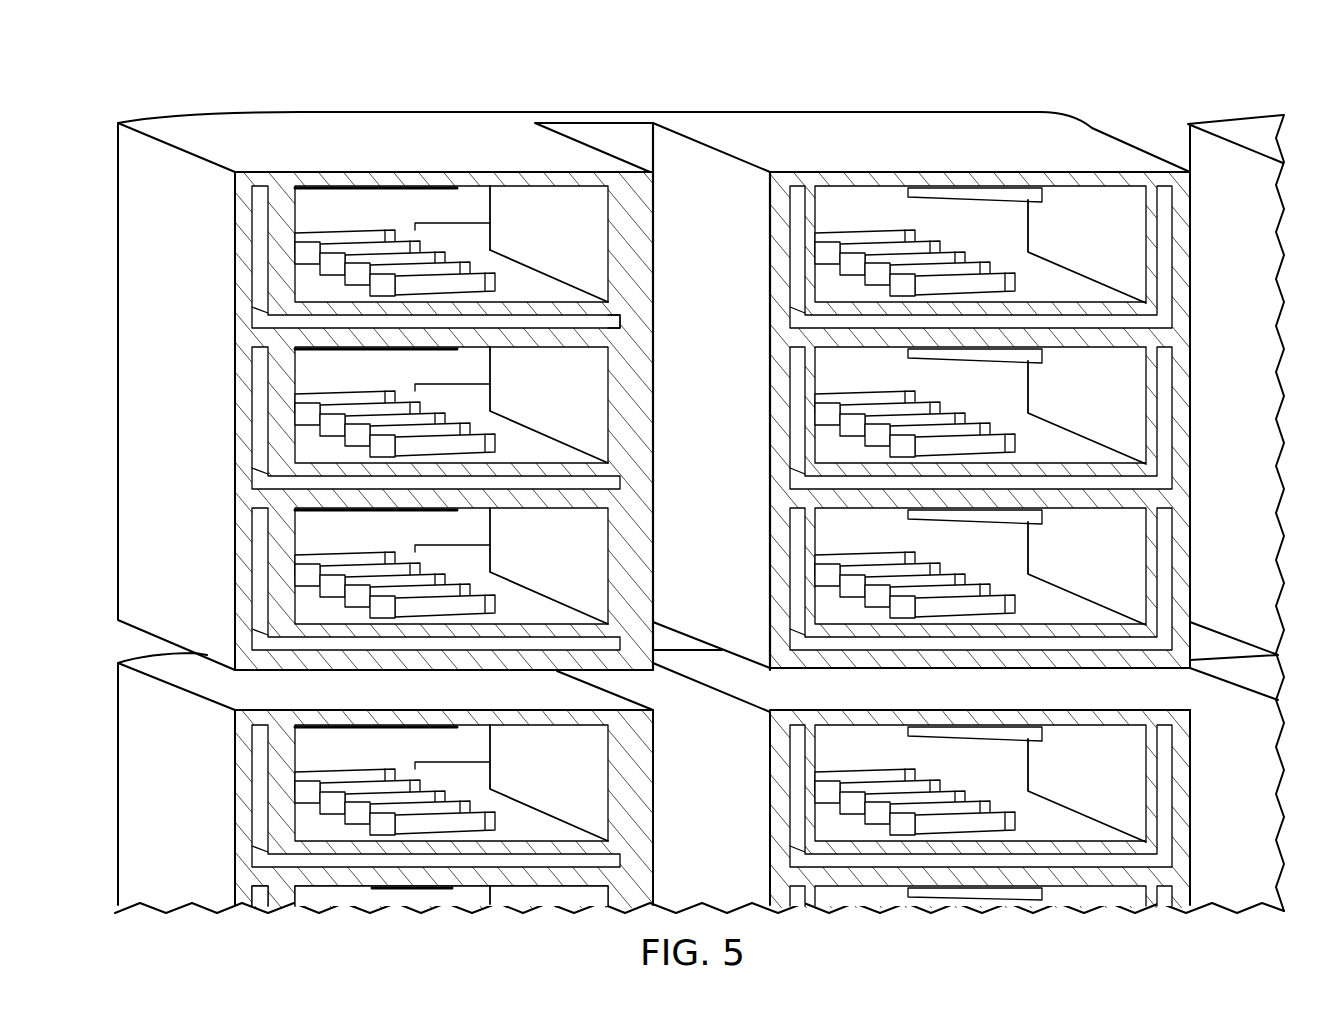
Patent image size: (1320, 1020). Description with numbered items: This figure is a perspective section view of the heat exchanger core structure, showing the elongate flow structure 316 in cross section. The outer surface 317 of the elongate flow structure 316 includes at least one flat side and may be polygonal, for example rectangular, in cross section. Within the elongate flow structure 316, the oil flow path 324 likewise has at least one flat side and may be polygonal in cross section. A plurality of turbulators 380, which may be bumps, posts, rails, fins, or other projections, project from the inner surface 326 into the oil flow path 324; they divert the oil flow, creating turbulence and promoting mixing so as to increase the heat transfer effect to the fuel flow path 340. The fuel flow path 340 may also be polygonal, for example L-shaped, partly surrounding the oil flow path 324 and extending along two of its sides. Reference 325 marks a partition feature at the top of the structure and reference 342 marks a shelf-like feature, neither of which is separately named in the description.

The elongate flow structure 316 is at (381, 138).
The outer surface 317 is at (735, 483).
The oil flow path 324 is at (571, 276).
The partition 325 is at (680, 168).
The inner surface 326 is at (517, 189).
The fuel flow path 340 is at (603, 328).
The shelf 342 is at (528, 322).
The turbulators 380 is at (437, 278).